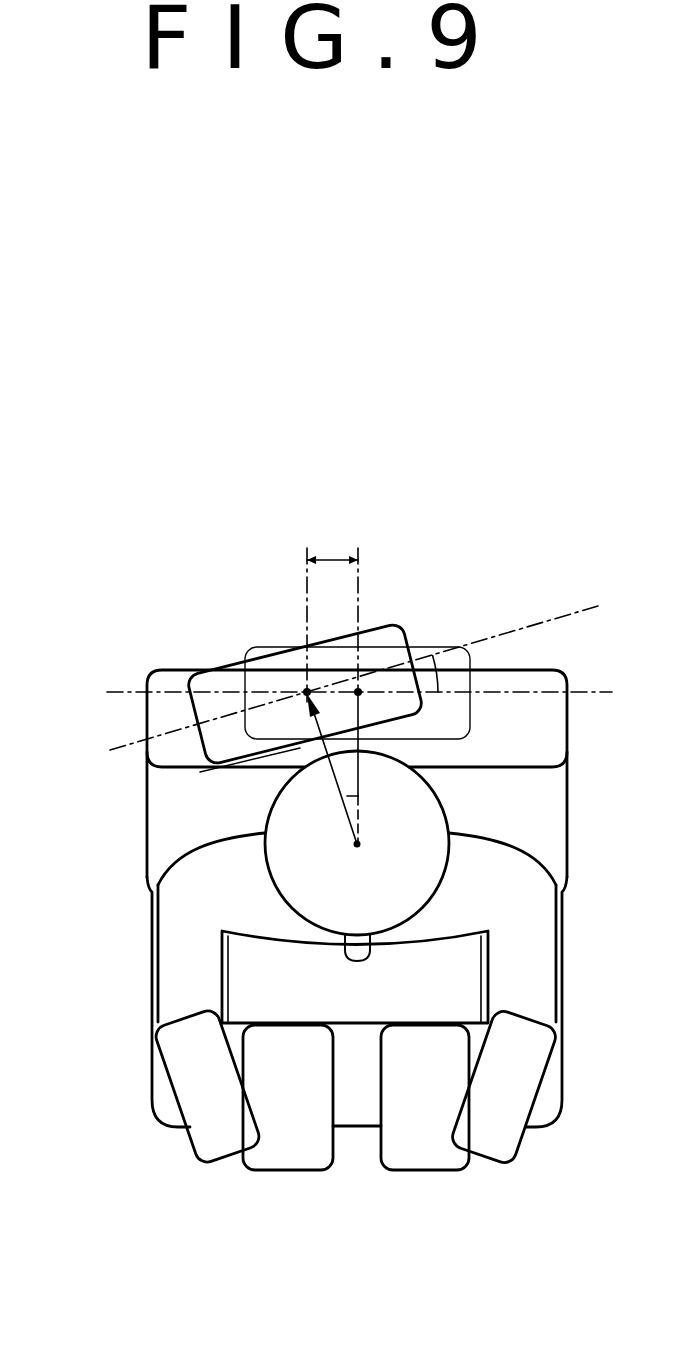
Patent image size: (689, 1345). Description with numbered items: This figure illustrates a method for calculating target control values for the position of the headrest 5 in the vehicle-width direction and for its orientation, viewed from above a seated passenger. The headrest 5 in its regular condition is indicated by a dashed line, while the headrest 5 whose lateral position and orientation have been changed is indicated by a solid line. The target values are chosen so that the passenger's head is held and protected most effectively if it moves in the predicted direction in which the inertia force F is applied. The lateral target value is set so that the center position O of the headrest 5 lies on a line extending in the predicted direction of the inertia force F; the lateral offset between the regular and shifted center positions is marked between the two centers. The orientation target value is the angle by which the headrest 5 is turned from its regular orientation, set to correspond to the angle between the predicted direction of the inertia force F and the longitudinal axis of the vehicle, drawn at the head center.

The headrest 5 is at (147, 694).
The center position of the headrest O is at (307, 692).
The inertia force F is at (200, 772).